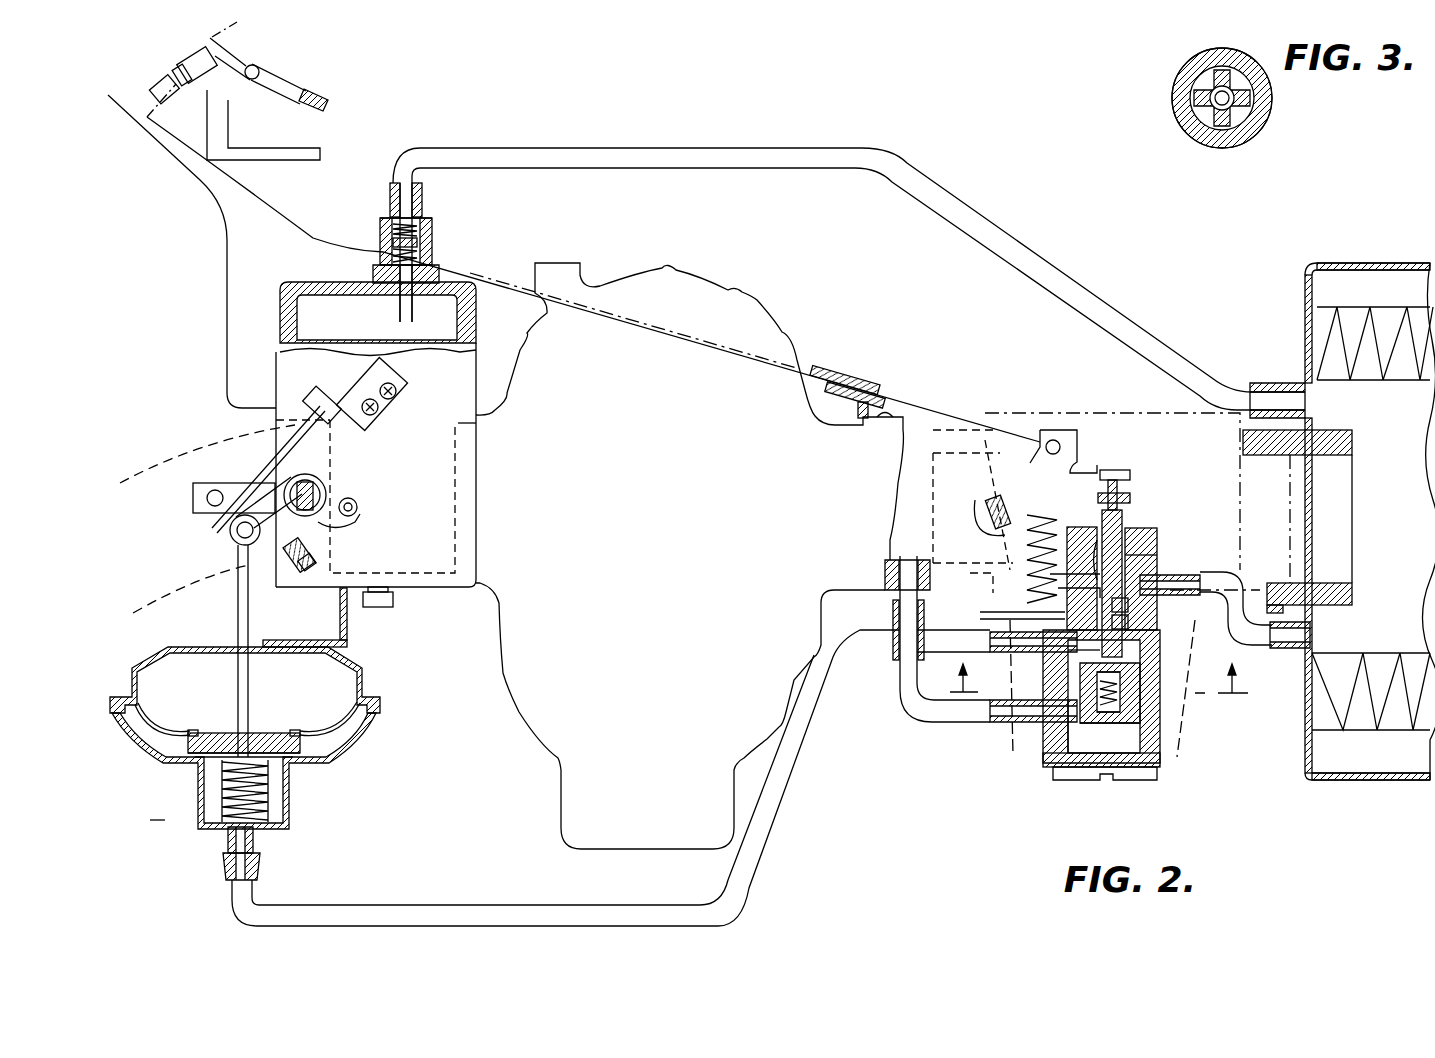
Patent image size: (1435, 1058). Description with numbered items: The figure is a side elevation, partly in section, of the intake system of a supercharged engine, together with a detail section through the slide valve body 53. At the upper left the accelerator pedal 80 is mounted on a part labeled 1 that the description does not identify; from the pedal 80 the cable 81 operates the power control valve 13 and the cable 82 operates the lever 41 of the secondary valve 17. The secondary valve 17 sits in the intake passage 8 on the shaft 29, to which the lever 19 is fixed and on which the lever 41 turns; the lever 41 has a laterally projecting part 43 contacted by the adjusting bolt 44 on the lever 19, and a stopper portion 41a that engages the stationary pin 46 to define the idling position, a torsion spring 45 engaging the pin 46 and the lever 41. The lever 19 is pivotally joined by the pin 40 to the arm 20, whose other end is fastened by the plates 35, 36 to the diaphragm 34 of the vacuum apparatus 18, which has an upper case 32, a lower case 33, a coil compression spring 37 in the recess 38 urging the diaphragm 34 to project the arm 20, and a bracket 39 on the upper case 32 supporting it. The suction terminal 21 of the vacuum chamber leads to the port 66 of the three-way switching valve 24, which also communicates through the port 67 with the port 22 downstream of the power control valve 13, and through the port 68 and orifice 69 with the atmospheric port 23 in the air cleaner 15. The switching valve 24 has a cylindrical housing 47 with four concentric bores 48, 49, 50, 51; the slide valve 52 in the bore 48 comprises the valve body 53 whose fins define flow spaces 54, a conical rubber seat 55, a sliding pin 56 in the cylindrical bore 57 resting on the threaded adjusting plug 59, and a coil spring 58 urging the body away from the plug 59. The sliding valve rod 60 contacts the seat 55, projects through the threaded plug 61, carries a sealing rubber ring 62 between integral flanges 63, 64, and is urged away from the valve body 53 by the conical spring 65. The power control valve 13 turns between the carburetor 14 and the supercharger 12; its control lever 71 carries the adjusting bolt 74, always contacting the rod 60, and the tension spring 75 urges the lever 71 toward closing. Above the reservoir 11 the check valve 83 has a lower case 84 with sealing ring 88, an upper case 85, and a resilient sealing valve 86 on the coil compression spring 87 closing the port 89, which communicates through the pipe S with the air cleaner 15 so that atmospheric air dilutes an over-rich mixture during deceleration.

In FIG. 2, the vehicle body / engine compartment panel 1 is at (228, 269).
In FIG. 2, the accelerator pedal 80 is at (328, 107).
In FIG. 2, the pipe S is at (728, 152).
In FIG. 2, the port 89 is at (425, 195).
In FIG. 2, the check valve 83 is at (450, 238).
In FIG. 2, the upper case 85 is at (430, 222).
In FIG. 2, the resilient sealing valve 86 is at (390, 240).
In FIG. 2, the coil compression spring 87 is at (392, 257).
In FIG. 2, the lower case 84 is at (438, 252).
In FIG. 2, the sealing ring 88 is at (440, 273).
In FIG. 2, the reservoir 11 is at (320, 282).
In FIG. 2, the supercharger 12 is at (628, 290).
In FIG. 2, the cable 81 is at (660, 342).
In FIG. 2, the cable 82 is at (342, 373).
In FIG. 2, the secondary valve 17 is at (332, 460).
In FIG. 2, the intake passage 8 is at (140, 547).
In FIG. 2, the lever 19 is at (242, 503).
In FIG. 2, the pin 40 is at (238, 566).
In FIG. 2, the lever 41 is at (240, 488).
In FIG. 2, the shaft 29 is at (326, 490).
In FIG. 2, the torsion spring 45 is at (357, 505).
In FIG. 2, the stationary pin 46 is at (356, 514).
In FIG. 2, the stopper portion 41a is at (345, 528).
In FIG. 2, the laterally projecting part 43 is at (336, 546).
In FIG. 2, the adjusting bolt 44 is at (308, 565).
In FIG. 2, the arm 20 is at (237, 618).
In FIG. 2, the bracket 39 is at (348, 641).
In FIG. 2, the upper case 32 is at (362, 668).
In FIG. 2, the vacuum apparatus 18 is at (366, 688).
In FIG. 2, the lower case 33 is at (337, 753).
In FIG. 2, the diaphragm 34 is at (342, 723).
In FIG. 2, the plate 35 is at (200, 733).
In FIG. 2, the plate 36 is at (192, 750).
In FIG. 2, the coil compression spring 37 is at (272, 787).
In FIG. 2, the recess 38 is at (282, 809).
In FIG. 2, the suction terminal 21 is at (226, 866).
In FIG. 2, the port 22 is at (893, 612).
In FIG. 2, the power control valve 13 is at (1000, 440).
In FIG. 2, the control lever 71 is at (1036, 452).
In FIG. 2, the carburetor 14 is at (1136, 425).
In FIG. 2, the adjusting bolt 74 is at (1114, 468).
In FIG. 2, the tension spring 75 is at (1032, 520).
In FIG. 2, the bore 49 is at (1100, 545).
In FIG. 2, the sliding valve rod 60 is at (1123, 520).
In FIG. 2, the threaded plug 61 is at (1133, 540).
In FIG. 2, the sealing rubber ring 62 is at (1142, 556).
In FIG. 2, the port 68 is at (1172, 580).
In FIG. 2, the orifice 69 is at (1186, 575).
In FIG. 2, the atmospheric port 23 is at (1285, 648).
In FIG. 2, the integral flange 63 is at (1050, 577).
In FIG. 2, the integral flange 64 is at (1062, 590).
In FIG. 2, the conical spring 65 is at (1000, 613).
In FIG. 2, the bore 50 is at (1135, 608).
In FIG. 2, the bore 51 is at (1140, 640).
In FIG. 2, the cylindrical housing 47 is at (1152, 660).
In FIG. 2, the bore 48 is at (1147, 680).
In FIG. 2, the port 66 is at (1010, 647).
In FIG. 2, the port 67 is at (1000, 721).
In FIG. 2, the conical shaped rubber seat 55 is at (1075, 651).
In FIG. 2, the flow spaces 54 is at (1086, 690).
In FIG. 3, the flow spaces 54 is at (1202, 112).
In FIG. 2, the valve body 53 is at (1130, 720).
In FIG. 2, the coil spring 58 is at (1122, 700).
In FIG. 2, the threaded adjusting plug 59 is at (1125, 743).
In FIG. 2, the slide valve 52 is at (1062, 726).
In FIG. 2, the three-way switching valve 24 is at (1043, 754).
In FIG. 2, the cylindrical bore 57 is at (1100, 748).
In FIG. 2, the sliding pin 56 is at (1118, 752).
In FIG. 2, the air cleaner 15 is at (1366, 266).